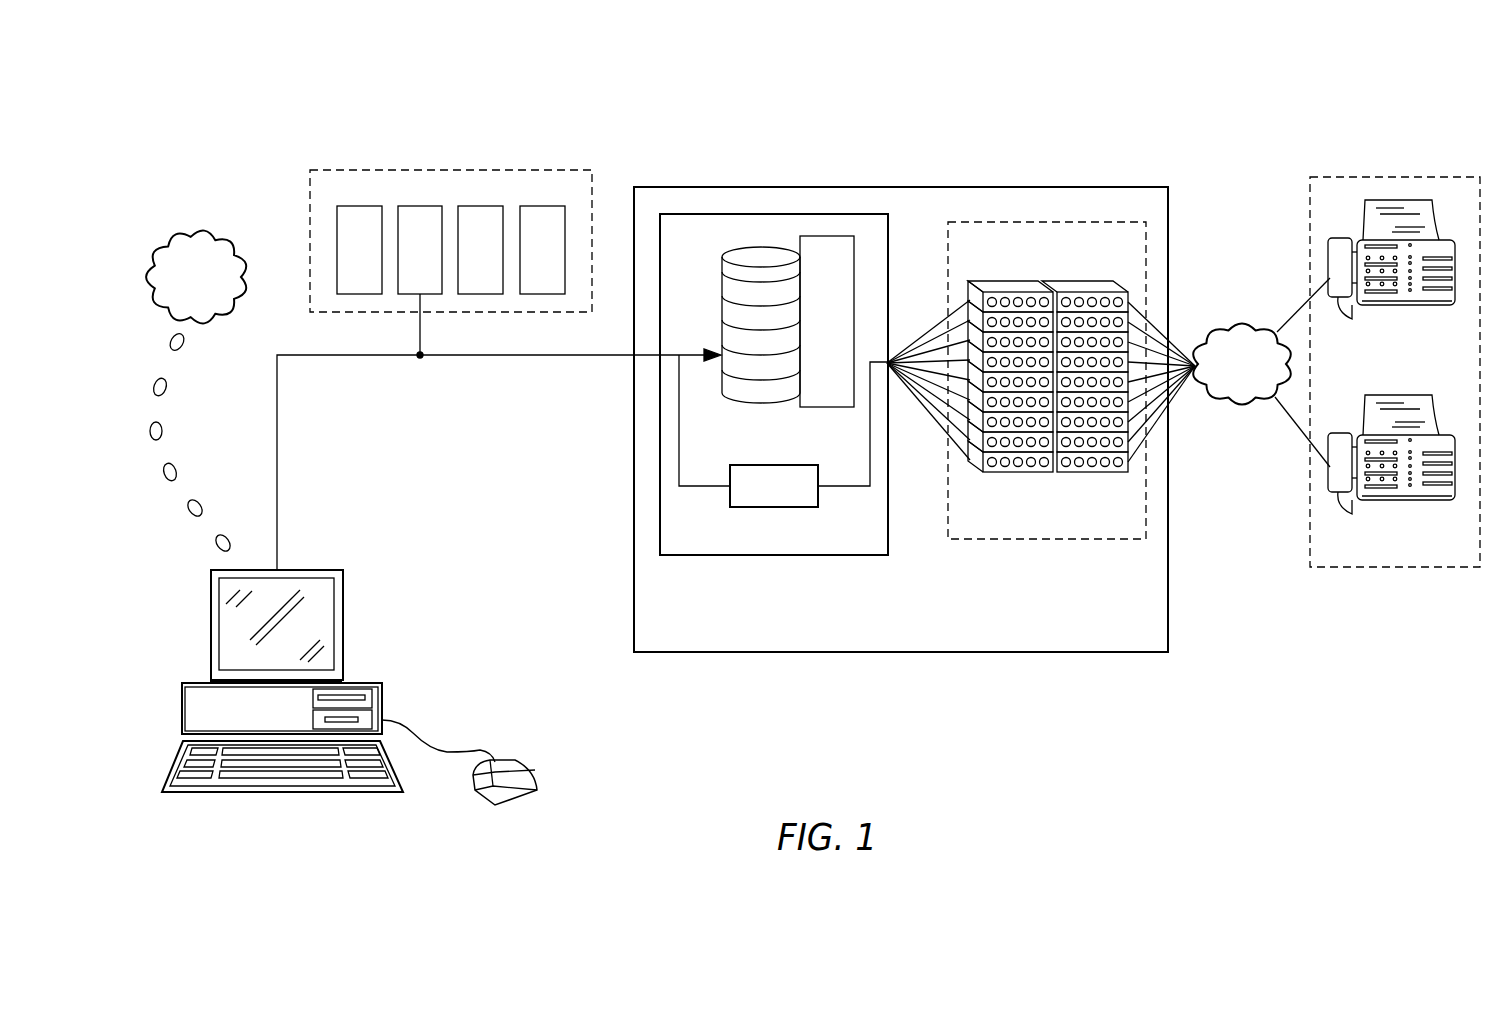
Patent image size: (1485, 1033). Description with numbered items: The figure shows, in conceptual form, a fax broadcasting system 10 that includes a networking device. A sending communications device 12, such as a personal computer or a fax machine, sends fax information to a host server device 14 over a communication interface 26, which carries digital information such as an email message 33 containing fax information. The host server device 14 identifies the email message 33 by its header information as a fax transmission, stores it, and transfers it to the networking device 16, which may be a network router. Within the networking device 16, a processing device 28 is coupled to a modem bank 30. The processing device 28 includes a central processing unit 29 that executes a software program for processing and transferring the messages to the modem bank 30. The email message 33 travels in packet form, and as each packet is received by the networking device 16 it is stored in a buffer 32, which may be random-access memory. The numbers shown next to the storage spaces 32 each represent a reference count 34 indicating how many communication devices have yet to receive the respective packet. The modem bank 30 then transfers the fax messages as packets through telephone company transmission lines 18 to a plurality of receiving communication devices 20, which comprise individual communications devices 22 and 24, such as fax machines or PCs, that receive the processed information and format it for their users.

The fax broadcasting system 10 is at (258, 152).
The sending communications device 12 is at (211, 624).
The host server device 14 is at (528, 170).
The networking device 16 is at (1135, 655).
The telephone company transmission lines 18 is at (1243, 404).
The plurality of receiving communication devices 20 is at (1345, 569).
The individual communications device 22 is at (1427, 314).
The individual communications device 24 is at (1428, 508).
The communication interface 26 is at (340, 357).
The processing device 28 is at (855, 558).
The Central Processing Unit 29 is at (790, 508).
The modem bank 30 is at (1100, 540).
The buffer 32 is at (772, 292).
The email message 33 is at (191, 228).
The reference count 34 is at (827, 241).